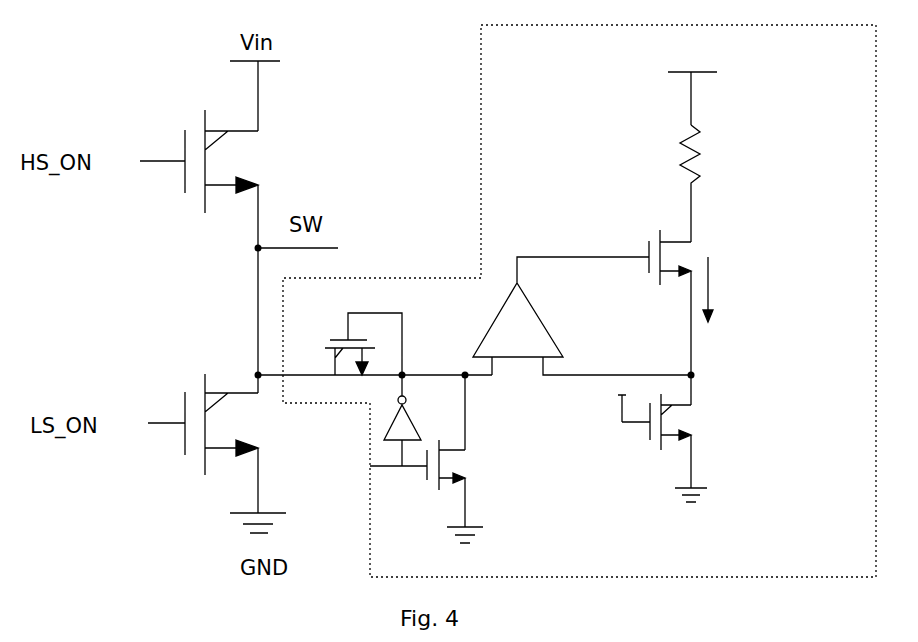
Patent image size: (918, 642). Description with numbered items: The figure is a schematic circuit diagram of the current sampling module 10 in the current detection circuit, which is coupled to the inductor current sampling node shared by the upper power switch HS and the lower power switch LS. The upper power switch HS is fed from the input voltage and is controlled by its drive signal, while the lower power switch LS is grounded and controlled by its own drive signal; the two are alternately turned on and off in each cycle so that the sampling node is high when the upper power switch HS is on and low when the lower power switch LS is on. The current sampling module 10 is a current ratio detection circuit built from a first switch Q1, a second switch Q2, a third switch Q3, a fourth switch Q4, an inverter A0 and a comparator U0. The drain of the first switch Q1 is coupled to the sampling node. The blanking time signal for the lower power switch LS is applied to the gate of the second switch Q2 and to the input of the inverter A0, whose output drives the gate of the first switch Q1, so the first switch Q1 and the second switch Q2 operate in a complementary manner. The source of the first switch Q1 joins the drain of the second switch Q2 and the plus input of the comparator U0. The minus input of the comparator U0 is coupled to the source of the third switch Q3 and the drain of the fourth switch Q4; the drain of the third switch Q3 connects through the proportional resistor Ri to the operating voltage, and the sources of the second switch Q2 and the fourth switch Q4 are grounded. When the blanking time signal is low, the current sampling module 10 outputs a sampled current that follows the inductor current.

The current sampling module 10 is at (493, 68).
The upper power switch HS is at (223, 179).
The lower power switch LS is at (219, 453).
The first switch Q1 is at (361, 344).
The second switch Q2 is at (436, 459).
The third switch Q3 is at (691, 302).
The fourth switch Q4 is at (674, 438).
The comparator U0 is at (578, 316).
The inverter A0 is at (413, 420).
The proportional resistor Ri is at (705, 183).